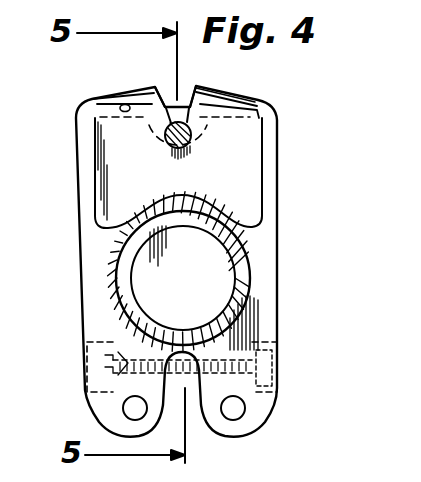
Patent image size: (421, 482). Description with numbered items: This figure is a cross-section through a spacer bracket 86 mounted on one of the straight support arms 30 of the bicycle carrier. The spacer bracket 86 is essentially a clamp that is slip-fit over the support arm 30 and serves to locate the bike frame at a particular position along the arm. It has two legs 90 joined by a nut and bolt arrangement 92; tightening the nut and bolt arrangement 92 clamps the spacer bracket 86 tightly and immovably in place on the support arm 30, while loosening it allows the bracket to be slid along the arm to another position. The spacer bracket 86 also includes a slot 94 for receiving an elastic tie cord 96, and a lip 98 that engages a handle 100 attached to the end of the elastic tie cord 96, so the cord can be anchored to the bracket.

The support arm 30 is at (245, 262).
The spacer bracket 86 is at (283, 132).
The legs 90 is at (113, 430).
The nut and bolt arrangement 92 is at (285, 345).
The slot 94 is at (189, 82).
The elastic tie cord 96 is at (190, 133).
The lip 98 is at (121, 104).
The handle 100 is at (250, 100).